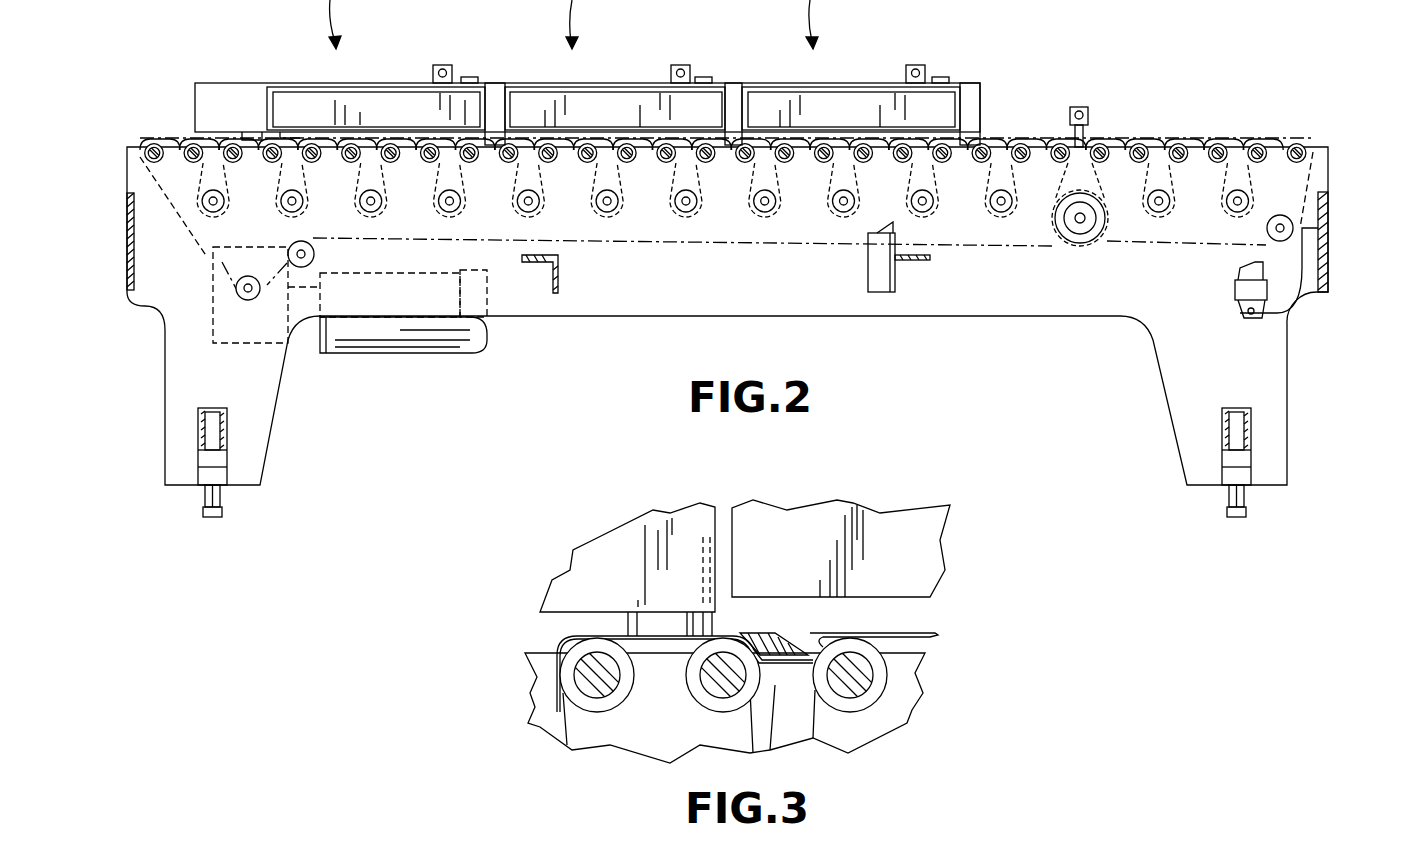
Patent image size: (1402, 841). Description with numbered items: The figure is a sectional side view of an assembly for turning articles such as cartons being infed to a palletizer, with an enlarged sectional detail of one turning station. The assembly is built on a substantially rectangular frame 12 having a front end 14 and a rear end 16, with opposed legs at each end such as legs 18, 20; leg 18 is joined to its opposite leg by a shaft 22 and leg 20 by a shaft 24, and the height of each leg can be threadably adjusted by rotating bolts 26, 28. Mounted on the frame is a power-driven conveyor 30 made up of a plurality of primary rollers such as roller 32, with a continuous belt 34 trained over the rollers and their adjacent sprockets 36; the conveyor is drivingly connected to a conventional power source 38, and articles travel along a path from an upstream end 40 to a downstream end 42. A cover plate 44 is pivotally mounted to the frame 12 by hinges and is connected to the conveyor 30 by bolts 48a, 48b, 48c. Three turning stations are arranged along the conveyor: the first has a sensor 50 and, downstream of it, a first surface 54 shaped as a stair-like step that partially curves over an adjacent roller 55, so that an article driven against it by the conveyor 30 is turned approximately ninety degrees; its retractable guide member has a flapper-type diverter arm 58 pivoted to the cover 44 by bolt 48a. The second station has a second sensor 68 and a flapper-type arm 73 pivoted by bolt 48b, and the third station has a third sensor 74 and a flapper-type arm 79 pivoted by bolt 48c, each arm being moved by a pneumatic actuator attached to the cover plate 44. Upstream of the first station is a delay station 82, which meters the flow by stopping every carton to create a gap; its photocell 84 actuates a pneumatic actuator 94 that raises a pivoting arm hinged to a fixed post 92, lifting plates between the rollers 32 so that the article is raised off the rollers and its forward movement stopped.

In FIG. 2, the frame 12 is at (1348, 268).
In FIG. 2, the front end 14 is at (1329, 208).
In FIG. 2, the rear end 16 is at (127, 210).
In FIG. 2, the leg 18 is at (1288, 398).
In FIG. 2, the leg 20 is at (165, 435).
In FIG. 2, the shaft 22 is at (1237, 408).
In FIG. 2, the shaft 24 is at (212, 408).
In FIG. 2, the bolt 26 is at (1230, 495).
In FIG. 2, the bolt 28 is at (205, 495).
In FIG. 2, the conveyor 30 is at (1231, 121).
In FIG. 2, the primary roller 32 is at (1021, 144).
In FIG. 2, the continuous belt 34 is at (1147, 243).
In FIG. 3, the continuous belt 34 is at (913, 634).
In FIG. 2, the sprocket 36 is at (1001, 215).
In FIG. 2, the power source 38 is at (430, 354).
In FIG. 2, the upstream end 40 is at (1333, 120).
In FIG. 2, the downstream end 42 is at (136, 123).
In FIG. 2, the cover plate 44 is at (300, 83).
In FIG. 3, the cover plate 44 is at (597, 557).
In FIG. 2, the bolt 48a is at (943, 77).
In FIG. 2, the bolt 48b is at (705, 77).
In FIG. 2, the bolt 48c is at (470, 77).
In FIG. 2, the sensor 50 is at (915, 65).
In FIG. 3, the first surface 54 is at (775, 633).
In FIG. 3, the roller 55 is at (712, 713).
In FIG. 2, the diverter arm 58 is at (860, 100).
In FIG. 2, the second sensor 68 is at (680, 65).
In FIG. 2, the flapper-type arm 73 is at (620, 100).
In FIG. 2, the third sensor 74 is at (441, 65).
In FIG. 2, the flapper-type arm 79 is at (383, 100).
In FIG. 3, the flapper-type arm 79 is at (905, 523).
In FIG. 2, the delay station 82 is at (1132, 120).
In FIG. 2, the sensor 84 is at (1079, 107).
In FIG. 2, the fixed post 92 is at (868, 272).
In FIG. 2, the pneumatic actuator 94 is at (1235, 289).